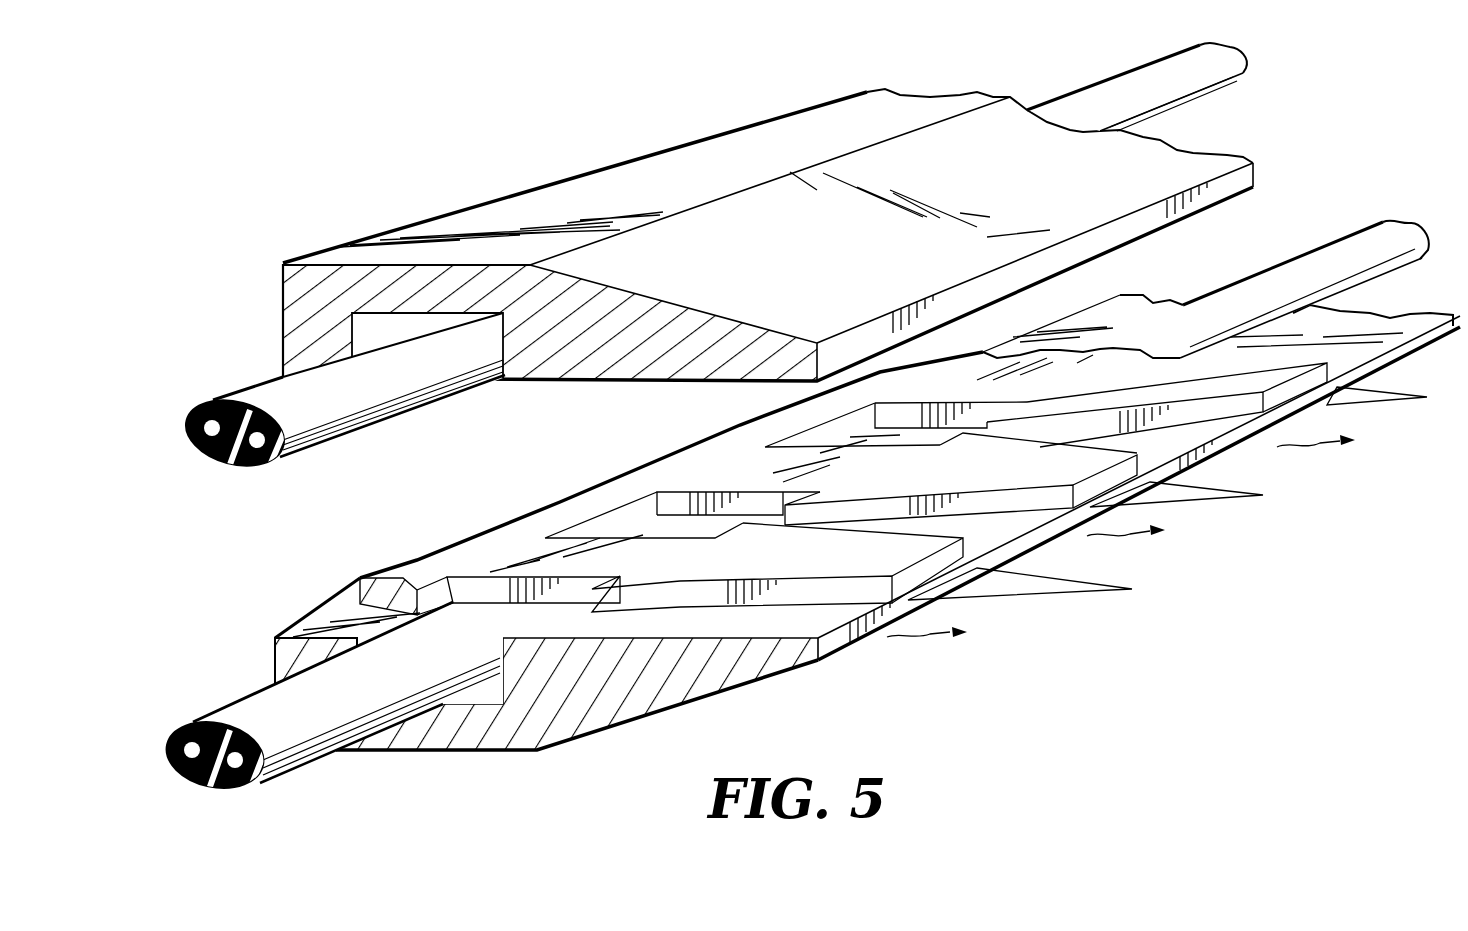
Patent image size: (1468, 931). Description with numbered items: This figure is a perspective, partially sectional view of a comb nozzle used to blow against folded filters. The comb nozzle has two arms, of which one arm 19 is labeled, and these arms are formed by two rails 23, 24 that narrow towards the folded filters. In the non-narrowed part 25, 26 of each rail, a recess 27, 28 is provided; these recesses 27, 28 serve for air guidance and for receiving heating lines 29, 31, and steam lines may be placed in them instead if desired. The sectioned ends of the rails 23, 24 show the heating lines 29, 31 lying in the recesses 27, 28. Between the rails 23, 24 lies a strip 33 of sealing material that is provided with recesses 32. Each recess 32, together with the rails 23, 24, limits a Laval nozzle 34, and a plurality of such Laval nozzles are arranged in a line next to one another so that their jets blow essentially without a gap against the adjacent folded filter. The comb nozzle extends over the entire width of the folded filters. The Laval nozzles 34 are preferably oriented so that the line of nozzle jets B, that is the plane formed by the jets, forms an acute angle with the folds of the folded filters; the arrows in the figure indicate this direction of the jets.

The arm 19 is at (716, 298).
The rail 23 is at (281, 301).
The rail 24 is at (795, 534).
The non-narrowed part 25 is at (597, 168).
The non-narrowed part 26 is at (478, 752).
The recess 27 is at (495, 372).
The recess 28 is at (572, 724).
The heating line 29 is at (236, 466).
The heating line 31 is at (183, 722).
The recess 32 is at (1007, 538).
The strip of sealing material 33 is at (1046, 426).
The Laval nozzle 34 is at (1207, 440).
The line of nozzle jets B is at (920, 637).